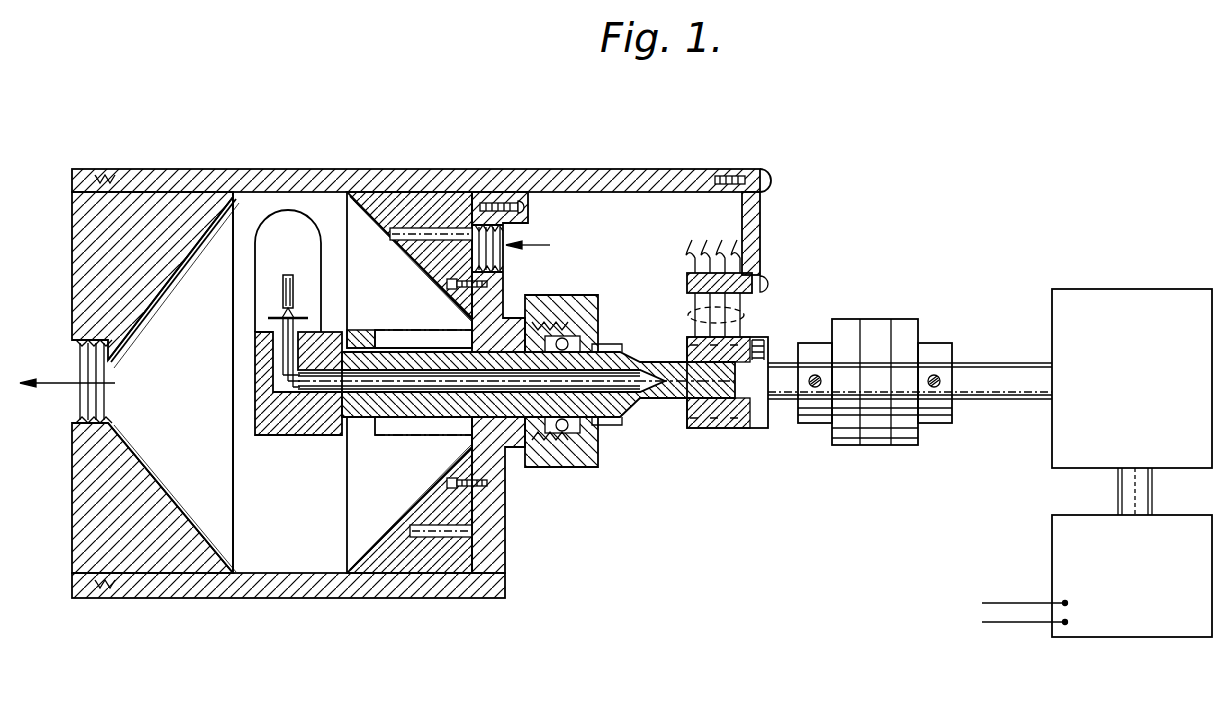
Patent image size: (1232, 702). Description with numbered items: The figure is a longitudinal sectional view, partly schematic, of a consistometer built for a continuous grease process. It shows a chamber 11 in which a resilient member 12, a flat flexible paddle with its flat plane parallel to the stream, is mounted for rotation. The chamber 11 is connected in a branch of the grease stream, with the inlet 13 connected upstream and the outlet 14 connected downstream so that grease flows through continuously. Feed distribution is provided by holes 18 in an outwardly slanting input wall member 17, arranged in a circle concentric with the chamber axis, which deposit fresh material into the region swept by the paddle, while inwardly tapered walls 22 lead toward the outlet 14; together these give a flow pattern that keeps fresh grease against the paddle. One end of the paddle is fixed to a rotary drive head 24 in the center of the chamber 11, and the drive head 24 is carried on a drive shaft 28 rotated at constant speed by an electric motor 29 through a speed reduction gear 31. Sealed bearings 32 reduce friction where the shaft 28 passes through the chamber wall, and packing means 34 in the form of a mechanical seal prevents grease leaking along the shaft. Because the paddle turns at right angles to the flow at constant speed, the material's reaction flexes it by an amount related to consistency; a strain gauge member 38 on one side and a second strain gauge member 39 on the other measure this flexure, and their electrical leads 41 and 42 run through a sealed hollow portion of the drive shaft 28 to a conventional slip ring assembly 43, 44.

The chamber 11 is at (298, 514).
The resilient member 12 is at (312, 280).
The inlet 13 is at (505, 262).
The outlet 14 is at (82, 403).
The outwardly slanting input wall member 17 is at (413, 192).
The holes 18 is at (422, 238).
The inwardly tapered walls 22 is at (165, 290).
The rotary drive head 24 is at (255, 378).
The drive shaft 28 is at (987, 367).
The constant speed electric motor 29 is at (1152, 637).
The speed reduction gear 31 is at (1135, 289).
The sealed bearings 32 is at (567, 344).
The packing means 34 is at (440, 440).
The strain gauge member 38 is at (300, 280).
The second strain gauge member 39 is at (283, 287).
The electrical lead 41 is at (301, 430).
The electrical lead 42 is at (415, 387).
The slip ring assembly 43 is at (748, 428).
The slip ring assembly 44 is at (748, 318).